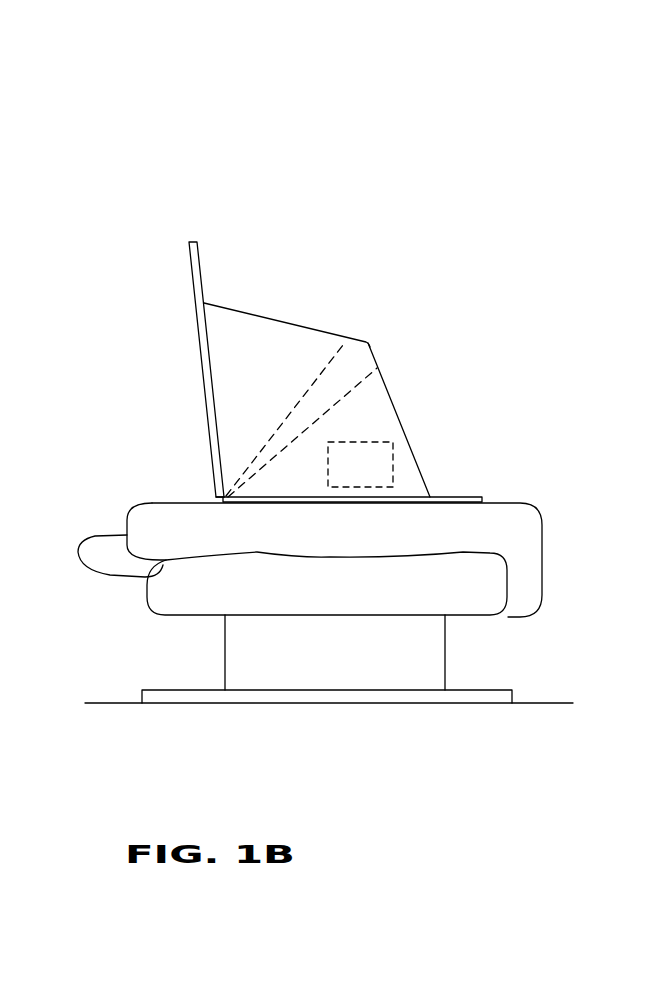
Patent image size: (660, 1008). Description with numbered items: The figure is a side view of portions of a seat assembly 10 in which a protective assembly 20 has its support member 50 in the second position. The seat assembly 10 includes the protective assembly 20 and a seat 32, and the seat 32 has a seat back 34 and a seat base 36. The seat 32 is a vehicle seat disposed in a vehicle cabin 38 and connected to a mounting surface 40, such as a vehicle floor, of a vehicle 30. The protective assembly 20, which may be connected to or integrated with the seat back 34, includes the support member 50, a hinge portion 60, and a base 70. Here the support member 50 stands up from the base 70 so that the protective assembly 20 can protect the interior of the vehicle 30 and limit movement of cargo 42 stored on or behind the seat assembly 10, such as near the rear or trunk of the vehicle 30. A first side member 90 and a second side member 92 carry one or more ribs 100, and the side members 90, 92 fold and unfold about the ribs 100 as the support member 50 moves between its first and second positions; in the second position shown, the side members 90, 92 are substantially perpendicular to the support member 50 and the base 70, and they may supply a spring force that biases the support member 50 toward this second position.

The seat assembly 10 is at (257, 158).
The protective assembly 20 is at (392, 337).
The vehicle 30 is at (538, 748).
The seat 32 is at (557, 477).
The seat back 34 is at (477, 533).
The seat base 36 is at (460, 600).
The vehicle cabin 38 is at (150, 263).
The mounting surface 40 is at (547, 702).
The cargo 42 is at (392, 458).
The support member 50 is at (223, 298).
The hinge portion 60 is at (212, 497).
The base 70 is at (447, 497).
The first side member 90 is at (288, 320).
The second side member 92 is at (287, 325).
The ribs 100 is at (323, 368).